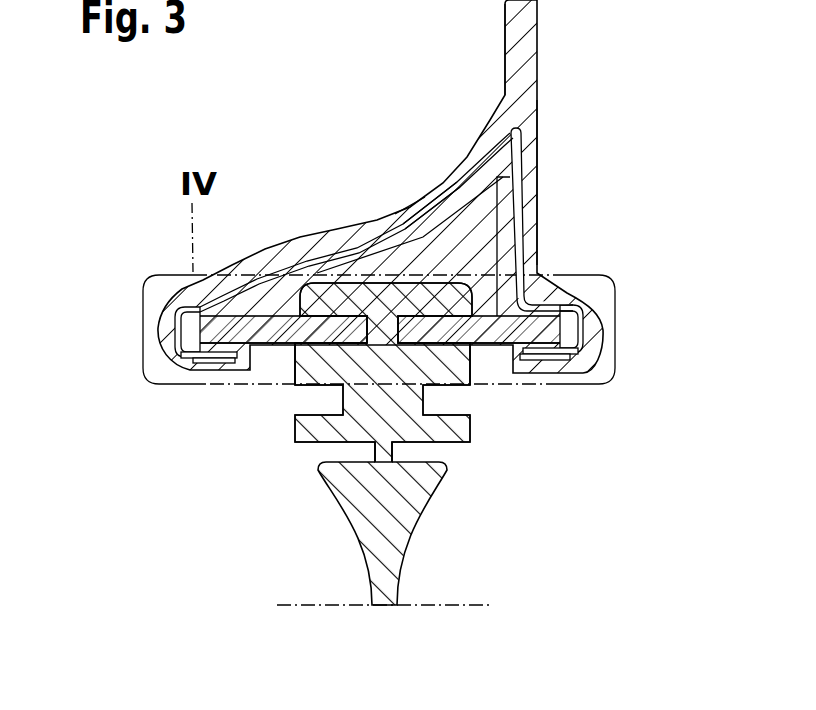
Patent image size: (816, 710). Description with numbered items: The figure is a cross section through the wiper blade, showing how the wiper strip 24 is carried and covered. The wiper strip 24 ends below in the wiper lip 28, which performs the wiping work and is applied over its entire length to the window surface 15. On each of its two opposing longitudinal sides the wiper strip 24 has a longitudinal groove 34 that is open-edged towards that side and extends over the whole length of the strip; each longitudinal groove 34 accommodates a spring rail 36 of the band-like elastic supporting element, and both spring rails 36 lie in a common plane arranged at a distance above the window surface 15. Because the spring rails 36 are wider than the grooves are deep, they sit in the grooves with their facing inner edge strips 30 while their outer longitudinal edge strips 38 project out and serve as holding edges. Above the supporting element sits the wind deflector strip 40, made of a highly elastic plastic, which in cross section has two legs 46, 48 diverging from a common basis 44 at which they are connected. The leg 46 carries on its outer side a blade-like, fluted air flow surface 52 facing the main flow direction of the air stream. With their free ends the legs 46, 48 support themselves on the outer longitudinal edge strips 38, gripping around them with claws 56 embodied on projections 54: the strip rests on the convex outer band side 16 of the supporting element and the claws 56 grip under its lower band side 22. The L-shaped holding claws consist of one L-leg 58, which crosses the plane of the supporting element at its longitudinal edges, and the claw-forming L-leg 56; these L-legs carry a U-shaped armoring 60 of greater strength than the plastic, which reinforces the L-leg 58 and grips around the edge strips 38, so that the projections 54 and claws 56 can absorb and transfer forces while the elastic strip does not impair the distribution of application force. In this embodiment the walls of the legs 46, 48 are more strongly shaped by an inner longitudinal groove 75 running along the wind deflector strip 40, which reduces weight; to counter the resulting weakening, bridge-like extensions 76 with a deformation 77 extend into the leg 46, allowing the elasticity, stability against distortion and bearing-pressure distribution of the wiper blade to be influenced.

The window surface 15 is at (447, 612).
The outer band side 16 is at (297, 285).
The lower band side 22 is at (300, 345).
The wiper strip 24 is at (284, 455).
The wiper lip 28 is at (383, 605).
The inner edge strips 30 is at (330, 430).
The longitudinal groove 34 is at (360, 345).
The spring rail 36 is at (330, 345).
The outer longitudinal edge strip 38 is at (252, 290).
The wind deflector strip 40 is at (546, 117).
The common basis 44 is at (527, 80).
The leg 46 is at (410, 207).
The leg 48 is at (527, 167).
The air flow surface 52 is at (412, 208).
The projection 54 is at (152, 329).
The claw 56 is at (215, 362).
The L-leg 58 is at (168, 340).
The armoring 60 is at (185, 315).
The inner longitudinal groove 75 is at (503, 200).
The bridge-like extension 76 is at (438, 200).
The deformation 77 is at (440, 190).